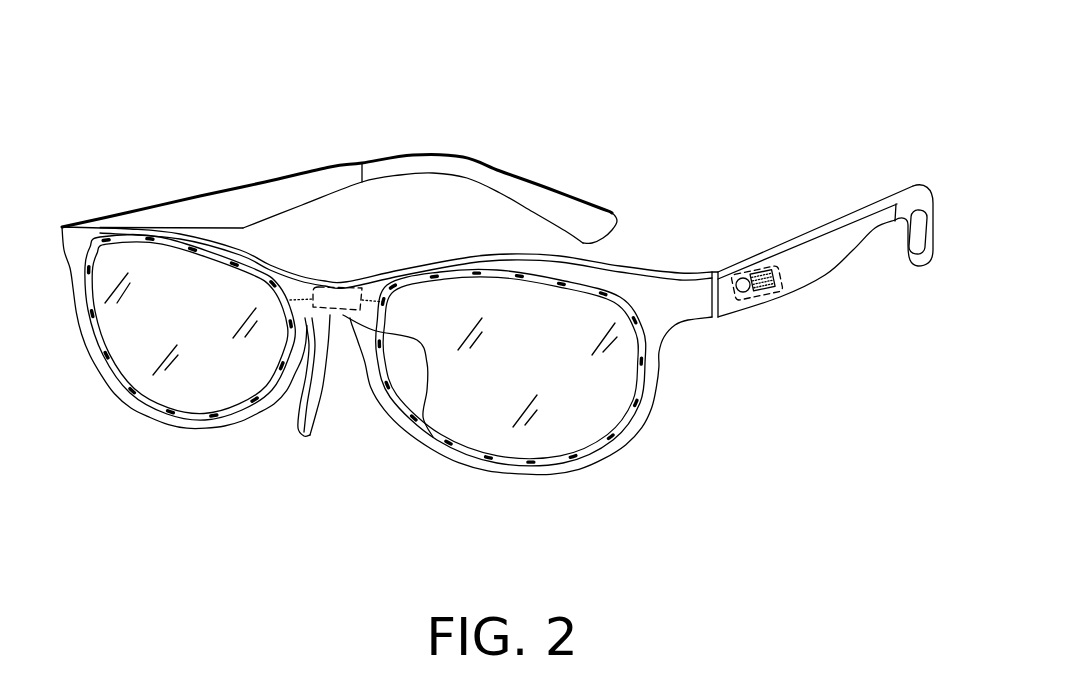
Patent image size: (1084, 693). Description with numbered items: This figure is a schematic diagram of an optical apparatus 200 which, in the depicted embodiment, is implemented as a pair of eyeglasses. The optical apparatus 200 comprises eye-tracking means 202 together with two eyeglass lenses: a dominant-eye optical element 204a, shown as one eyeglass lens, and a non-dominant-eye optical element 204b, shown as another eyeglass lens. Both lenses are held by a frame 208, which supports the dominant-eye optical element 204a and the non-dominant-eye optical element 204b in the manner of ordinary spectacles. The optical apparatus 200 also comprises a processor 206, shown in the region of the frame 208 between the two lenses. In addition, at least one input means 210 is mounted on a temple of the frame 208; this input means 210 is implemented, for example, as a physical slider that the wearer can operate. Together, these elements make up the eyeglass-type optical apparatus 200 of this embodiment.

The optical apparatus 200 is at (497, 293).
The eye-tracking means 202 is at (649, 378).
The dominant-eye optical element 204a is at (207, 390).
The non-dominant-eye optical element 204b is at (458, 402).
The processor 206 is at (332, 307).
The frame 208 is at (163, 233).
The input means 210 is at (758, 272).